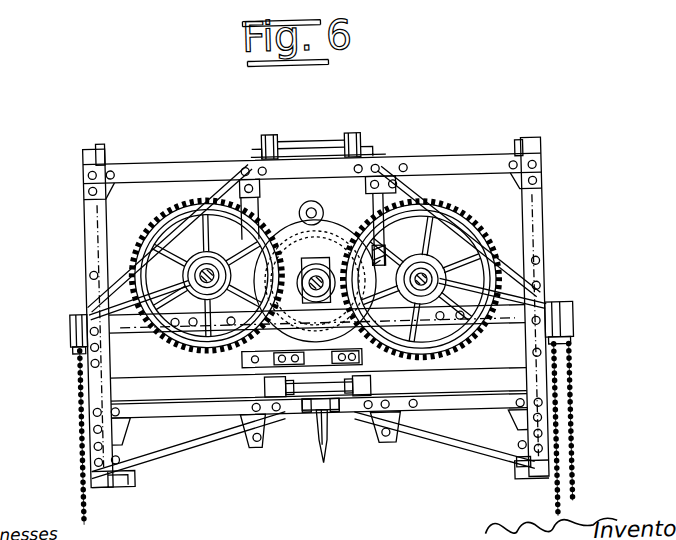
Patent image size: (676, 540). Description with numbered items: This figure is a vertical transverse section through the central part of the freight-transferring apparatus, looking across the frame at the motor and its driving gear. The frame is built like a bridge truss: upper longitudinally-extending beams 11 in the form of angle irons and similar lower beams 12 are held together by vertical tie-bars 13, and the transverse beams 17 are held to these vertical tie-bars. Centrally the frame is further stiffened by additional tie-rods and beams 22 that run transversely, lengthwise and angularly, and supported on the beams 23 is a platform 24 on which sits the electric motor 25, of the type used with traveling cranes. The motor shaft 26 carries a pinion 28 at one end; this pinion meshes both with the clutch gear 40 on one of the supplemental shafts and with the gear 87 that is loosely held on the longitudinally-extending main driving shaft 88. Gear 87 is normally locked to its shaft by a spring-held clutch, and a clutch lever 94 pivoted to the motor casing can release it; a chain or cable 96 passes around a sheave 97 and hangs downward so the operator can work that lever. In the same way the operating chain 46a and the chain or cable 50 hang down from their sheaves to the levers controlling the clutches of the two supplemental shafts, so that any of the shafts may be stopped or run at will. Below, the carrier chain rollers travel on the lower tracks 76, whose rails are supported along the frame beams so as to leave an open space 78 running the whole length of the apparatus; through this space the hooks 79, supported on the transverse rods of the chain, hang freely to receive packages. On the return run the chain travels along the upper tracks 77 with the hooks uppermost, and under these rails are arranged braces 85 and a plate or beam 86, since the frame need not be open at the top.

The upper longitudinally-extending beams 11 is at (517, 155).
The lower beams 12 is at (511, 467).
The vertical tie-bars 13 is at (95, 218).
The transverse beams 17 is at (317, 339).
The tie-rods and beams 22 is at (422, 193).
The beams 23 is at (236, 377).
The platform 24 is at (316, 345).
The motor 25 is at (296, 231).
The motor shaft 26 is at (320, 262).
The pinion 28 is at (341, 257).
The clutch gear 40 is at (479, 233).
The operating chain 46a is at (569, 468).
The chain or cable 50 is at (553, 489).
The lower tracks 76 is at (340, 412).
The upper tracks 77 is at (374, 145).
The open space 78 is at (296, 411).
The hooks 79 is at (322, 463).
The braces 85 is at (138, 172).
The plate or beam 86 is at (312, 145).
The gear 87 is at (157, 215).
The main driving shaft 88 is at (212, 265).
The clutch lever 94 is at (107, 317).
The chain or cable 96 is at (78, 420).
The sheave 97 is at (72, 337).